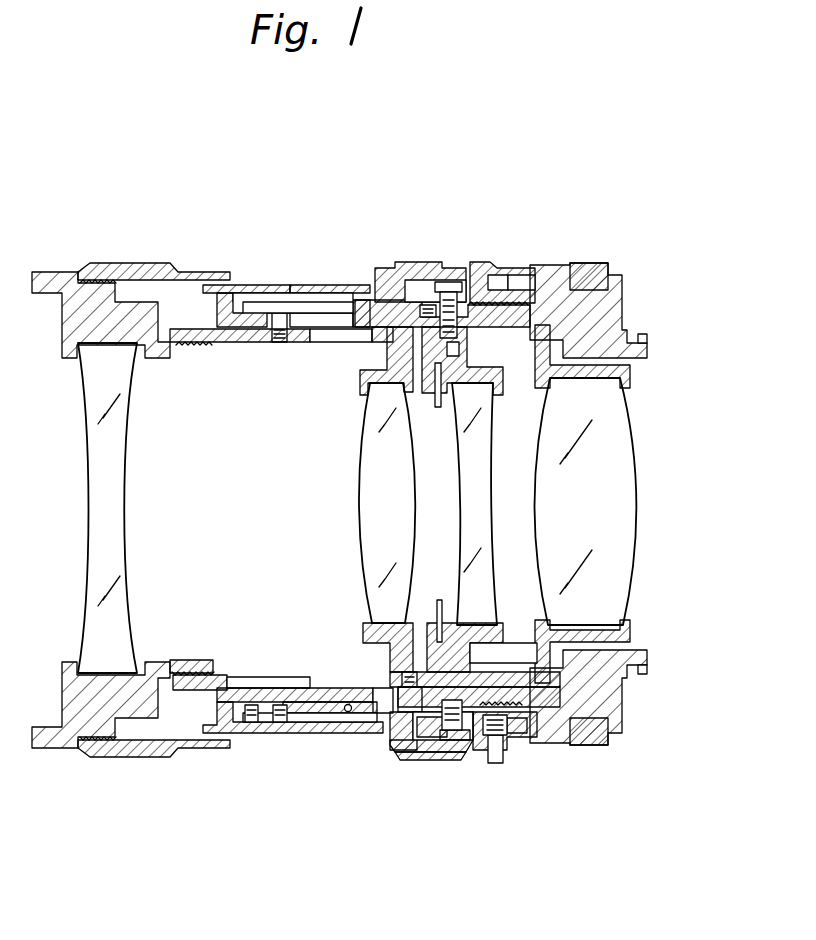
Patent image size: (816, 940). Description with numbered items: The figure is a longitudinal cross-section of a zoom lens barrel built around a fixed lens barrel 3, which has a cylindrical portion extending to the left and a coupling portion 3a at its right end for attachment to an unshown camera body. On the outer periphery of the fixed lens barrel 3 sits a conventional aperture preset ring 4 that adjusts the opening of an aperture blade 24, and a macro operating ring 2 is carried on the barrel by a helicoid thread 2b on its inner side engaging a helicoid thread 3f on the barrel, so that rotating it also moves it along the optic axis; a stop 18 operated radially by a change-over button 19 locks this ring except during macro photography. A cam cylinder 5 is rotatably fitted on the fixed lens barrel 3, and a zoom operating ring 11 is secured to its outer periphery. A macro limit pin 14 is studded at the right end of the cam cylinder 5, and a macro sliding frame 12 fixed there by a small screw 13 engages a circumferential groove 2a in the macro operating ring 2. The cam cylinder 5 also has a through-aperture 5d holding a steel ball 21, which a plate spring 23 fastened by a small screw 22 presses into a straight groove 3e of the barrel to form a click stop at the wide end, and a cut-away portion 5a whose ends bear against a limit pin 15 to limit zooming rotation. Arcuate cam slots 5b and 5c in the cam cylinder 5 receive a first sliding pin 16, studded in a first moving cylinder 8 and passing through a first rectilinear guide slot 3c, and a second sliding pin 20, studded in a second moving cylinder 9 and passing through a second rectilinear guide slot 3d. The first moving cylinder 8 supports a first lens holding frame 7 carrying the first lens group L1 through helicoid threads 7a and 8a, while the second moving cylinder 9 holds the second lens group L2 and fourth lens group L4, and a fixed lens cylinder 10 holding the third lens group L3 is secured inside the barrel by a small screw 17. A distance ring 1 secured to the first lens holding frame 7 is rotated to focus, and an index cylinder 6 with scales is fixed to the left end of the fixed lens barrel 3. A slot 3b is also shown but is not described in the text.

The distance ring 1 is at (148, 266).
The macro operating ring 2 is at (492, 261).
The circumferential groove 2a is at (476, 264).
The helicoid thread 2b is at (475, 665).
The fixed lens barrel 3 is at (553, 264).
The coupling portion 3a is at (643, 333).
The fixed barrel portion 3b is at (514, 264).
The first rectilinear guide slot 3c is at (332, 344).
The second rectilinear guide slot 3d is at (380, 690).
The straight groove 3e is at (306, 677).
The helicoid thread 3f is at (466, 702).
The aperture preset ring 4 is at (596, 263).
The cam cylinder 5 is at (362, 299).
The cut-away portion 5a is at (397, 262).
The arcuate cam slot 5b is at (300, 304).
The arcuate cam slot 5c is at (390, 752).
The through-aperture 5d is at (335, 742).
The index cylinder 6 is at (330, 284).
The first lens holding frame 7 is at (63, 334).
The helicoid thread 7a is at (192, 350).
The first moving cylinder 8 is at (216, 665).
The helicoid thread 8a is at (206, 529).
The second moving cylinder 9 is at (540, 622).
The fixed lens cylinder 10 is at (497, 388).
The zoom operating ring 11 is at (410, 756).
The macro sliding frame 12 is at (440, 281).
The small screw 13 is at (458, 281).
The macro limit pin 14 is at (452, 752).
The limit pin 15 is at (427, 304).
The first sliding pin 16 is at (262, 284).
The small screw 17 is at (459, 348).
The stop 18 is at (522, 740).
The change-over button 19 is at (500, 766).
The second sliding pin 20 is at (405, 762).
The steel ball 21 is at (348, 713).
The small screw 22 is at (253, 724).
The plate spring 23 is at (281, 724).
The aperture blade 24 is at (438, 408).
The first lens group L1 is at (119, 513).
The second lens group L2 is at (367, 515).
The third lens group L3 is at (466, 515).
The fourth lens group L4 is at (634, 515).